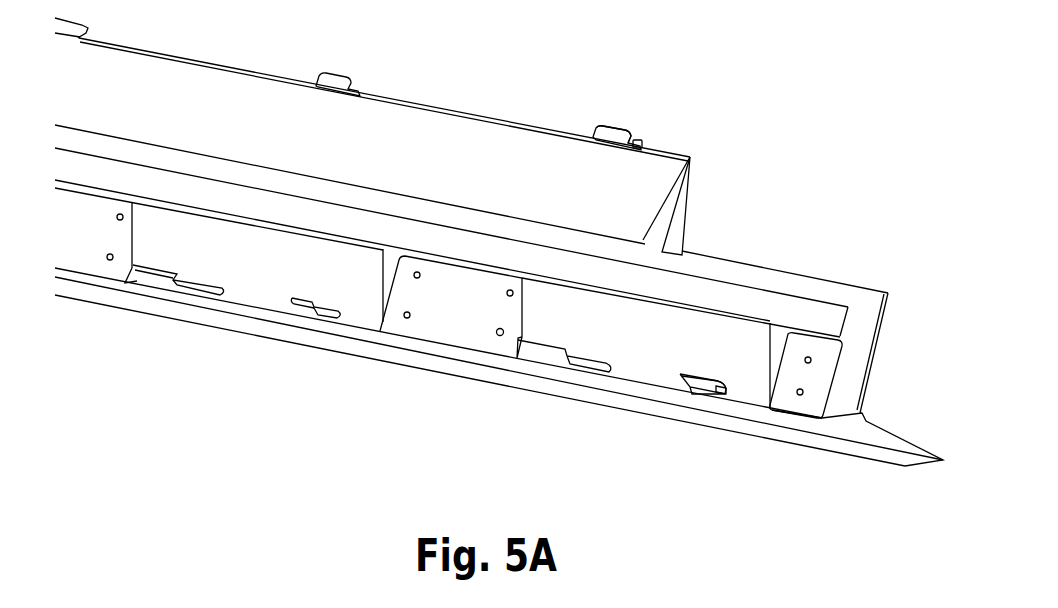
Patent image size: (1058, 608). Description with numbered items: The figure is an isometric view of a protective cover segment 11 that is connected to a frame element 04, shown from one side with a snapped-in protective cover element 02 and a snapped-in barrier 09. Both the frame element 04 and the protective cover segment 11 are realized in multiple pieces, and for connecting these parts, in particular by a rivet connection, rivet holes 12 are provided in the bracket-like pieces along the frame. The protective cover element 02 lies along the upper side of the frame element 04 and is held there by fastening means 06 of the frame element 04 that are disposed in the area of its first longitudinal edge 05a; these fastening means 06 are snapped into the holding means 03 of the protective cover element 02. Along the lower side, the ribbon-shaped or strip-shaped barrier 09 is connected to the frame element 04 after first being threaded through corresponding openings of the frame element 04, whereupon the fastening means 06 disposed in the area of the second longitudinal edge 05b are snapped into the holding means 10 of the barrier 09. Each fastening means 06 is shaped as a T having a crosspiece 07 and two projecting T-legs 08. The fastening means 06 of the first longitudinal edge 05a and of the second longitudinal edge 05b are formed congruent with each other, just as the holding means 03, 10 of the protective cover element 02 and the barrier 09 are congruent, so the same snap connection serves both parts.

The protective cover element 02 is at (385, 142).
The holding means 03 is at (335, 87).
The frame element 04 is at (795, 288).
The first longitudinal edge 05a is at (702, 258).
The second longitudinal edge 05b is at (130, 262).
The fastening means 06 is at (627, 118).
The crosspiece 07 is at (613, 135).
The T-legs 08 is at (637, 142).
The barrier 09 is at (217, 258).
The holding means 10 is at (312, 302).
The protective cover segment 11 is at (455, 332).
The rivet holes 12 is at (502, 333).